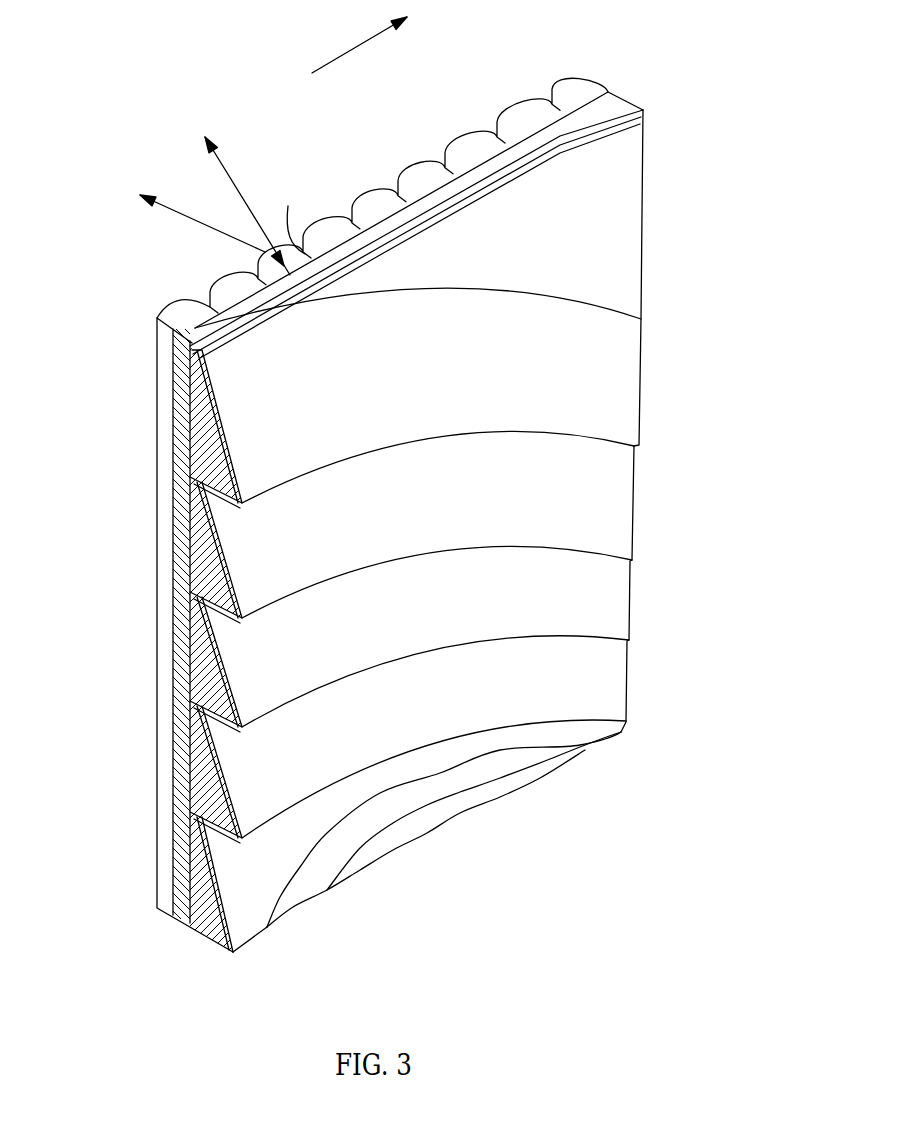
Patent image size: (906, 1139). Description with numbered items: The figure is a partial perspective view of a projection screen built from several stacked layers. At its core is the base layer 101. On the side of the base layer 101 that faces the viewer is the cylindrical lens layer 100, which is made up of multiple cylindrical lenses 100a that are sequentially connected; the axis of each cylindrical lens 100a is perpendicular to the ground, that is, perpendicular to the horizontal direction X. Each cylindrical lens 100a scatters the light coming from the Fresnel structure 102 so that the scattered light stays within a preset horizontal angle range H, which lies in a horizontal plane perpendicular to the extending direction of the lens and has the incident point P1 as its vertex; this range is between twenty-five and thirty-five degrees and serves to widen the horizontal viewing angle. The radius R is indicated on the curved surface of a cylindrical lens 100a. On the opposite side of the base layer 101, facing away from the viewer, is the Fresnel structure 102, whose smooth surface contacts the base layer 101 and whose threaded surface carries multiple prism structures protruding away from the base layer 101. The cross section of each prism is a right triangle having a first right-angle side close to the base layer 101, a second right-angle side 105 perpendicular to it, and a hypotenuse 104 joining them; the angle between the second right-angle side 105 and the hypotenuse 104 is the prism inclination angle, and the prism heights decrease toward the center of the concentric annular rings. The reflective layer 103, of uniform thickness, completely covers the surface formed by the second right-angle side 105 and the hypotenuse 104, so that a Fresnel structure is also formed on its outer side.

The cylindrical lens layer 100 is at (180, 320).
The cylindrical lens 100a is at (566, 90).
The base layer 101 is at (430, 203).
The Fresnel structure 102 is at (191, 570).
The reflective layer 103 is at (618, 215).
The hypotenuse 104 is at (224, 430).
The second right-angle side 105 is at (191, 528).
The horizontal direction X is at (359, 43).
The preset horizontal angle range H is at (202, 214).
The radius R is at (294, 215).
The incident point P1 is at (255, 267).